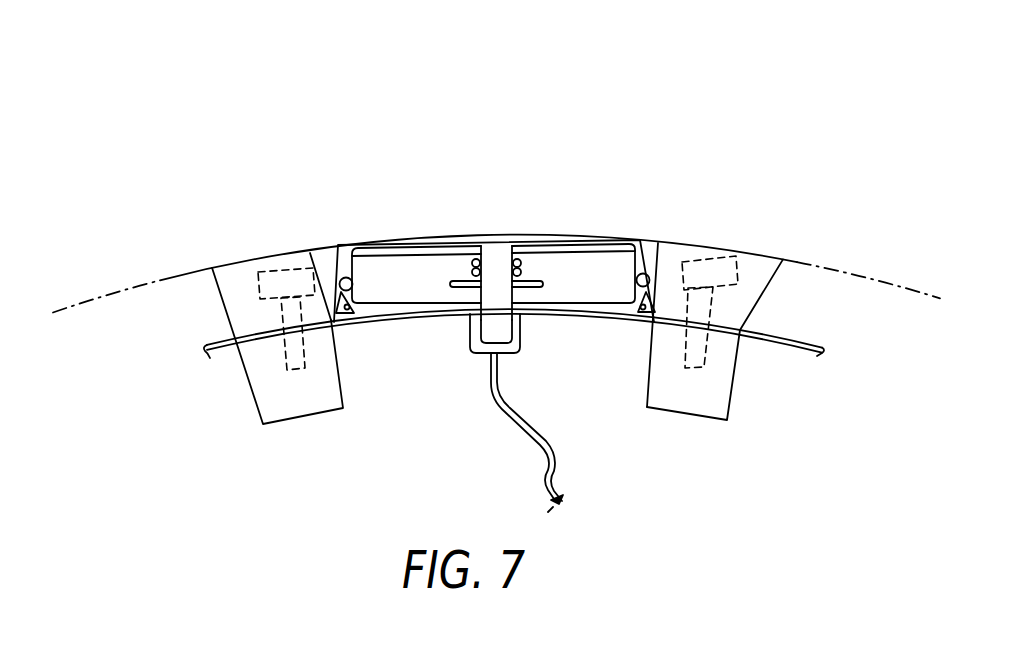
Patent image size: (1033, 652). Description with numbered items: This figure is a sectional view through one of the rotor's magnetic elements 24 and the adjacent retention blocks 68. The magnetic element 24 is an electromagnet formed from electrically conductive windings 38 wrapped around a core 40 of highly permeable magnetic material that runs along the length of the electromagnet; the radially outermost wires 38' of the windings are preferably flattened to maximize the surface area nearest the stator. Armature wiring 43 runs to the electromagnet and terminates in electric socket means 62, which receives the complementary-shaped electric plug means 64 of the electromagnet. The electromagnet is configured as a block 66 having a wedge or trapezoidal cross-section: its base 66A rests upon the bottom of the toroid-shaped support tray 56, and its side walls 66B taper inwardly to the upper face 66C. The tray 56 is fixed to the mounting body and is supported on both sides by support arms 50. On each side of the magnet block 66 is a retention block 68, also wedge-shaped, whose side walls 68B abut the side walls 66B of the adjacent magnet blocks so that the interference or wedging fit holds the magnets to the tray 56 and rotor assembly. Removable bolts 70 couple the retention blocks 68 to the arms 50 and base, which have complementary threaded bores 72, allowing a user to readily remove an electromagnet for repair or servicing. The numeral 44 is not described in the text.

The magnetic element 24 is at (498, 108).
The windings 38 is at (588, 207).
The radially outermost wires 38' is at (416, 210).
The core 40 is at (493, 246).
The armature wiring 43 is at (553, 463).
The contact terminals 44 is at (527, 245).
The support arm 50 is at (280, 405).
The support tray 56 is at (792, 333).
The electric socket means 62 is at (482, 354).
The electric plug means 64 is at (483, 330).
The magnet block 66 is at (538, 320).
The base 66A is at (432, 320).
The side walls 66B is at (344, 272).
The upper face 66C is at (557, 246).
The retention block 68 is at (213, 285).
The side walls 68B is at (320, 248).
The bolts 70 is at (280, 267).
The threaded bores 72 is at (707, 350).